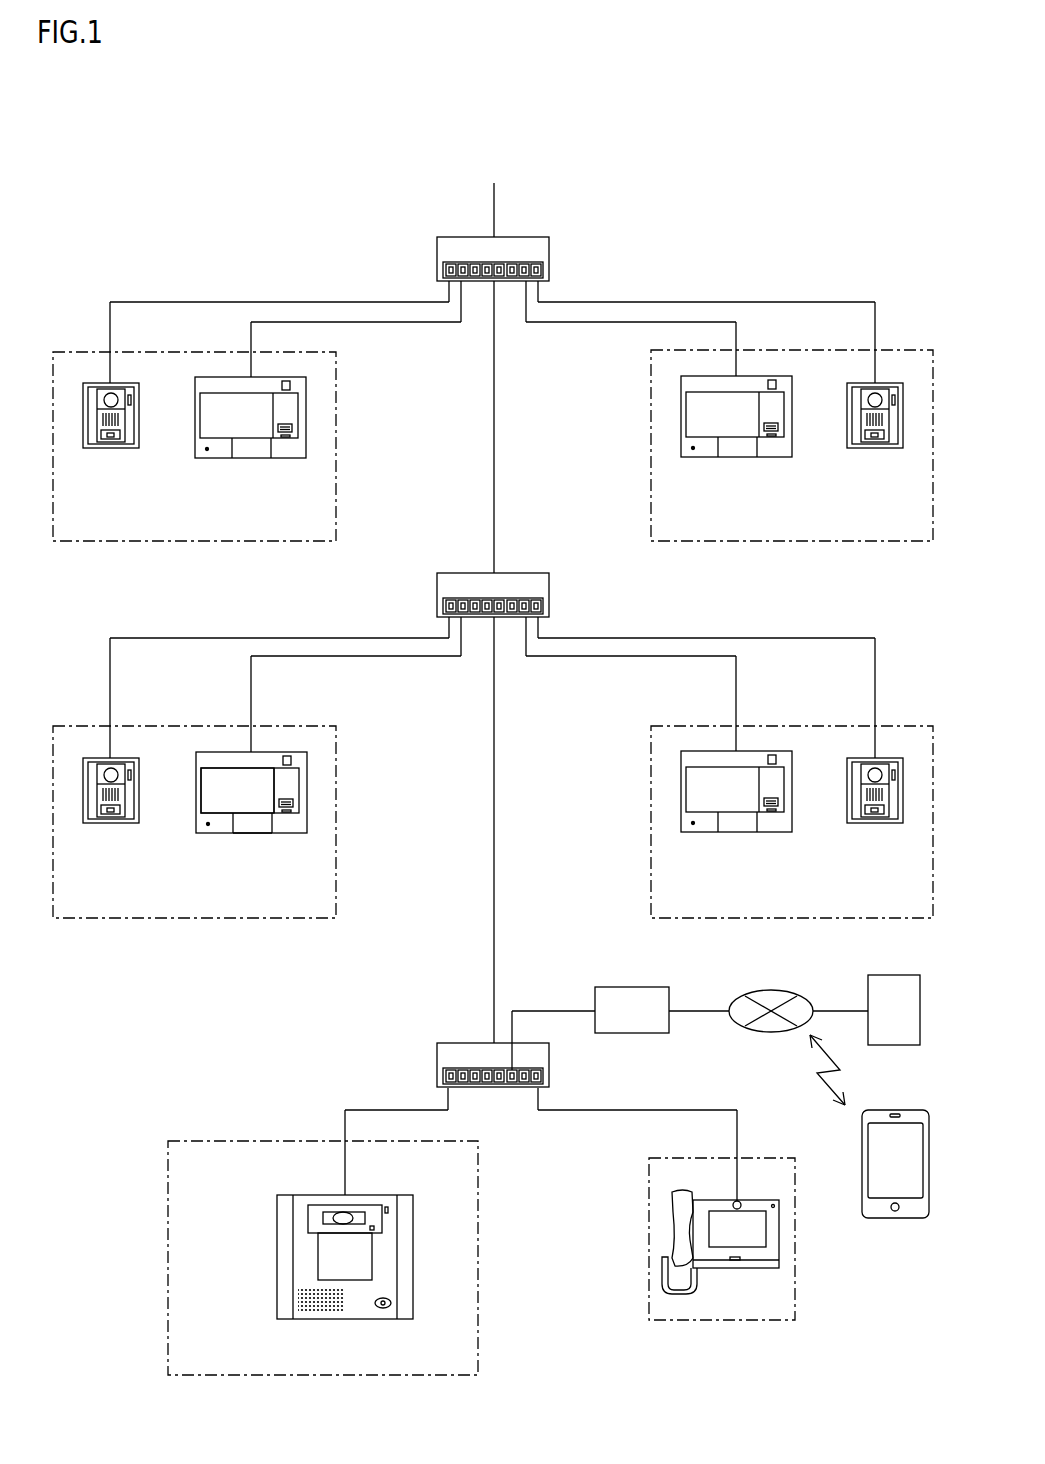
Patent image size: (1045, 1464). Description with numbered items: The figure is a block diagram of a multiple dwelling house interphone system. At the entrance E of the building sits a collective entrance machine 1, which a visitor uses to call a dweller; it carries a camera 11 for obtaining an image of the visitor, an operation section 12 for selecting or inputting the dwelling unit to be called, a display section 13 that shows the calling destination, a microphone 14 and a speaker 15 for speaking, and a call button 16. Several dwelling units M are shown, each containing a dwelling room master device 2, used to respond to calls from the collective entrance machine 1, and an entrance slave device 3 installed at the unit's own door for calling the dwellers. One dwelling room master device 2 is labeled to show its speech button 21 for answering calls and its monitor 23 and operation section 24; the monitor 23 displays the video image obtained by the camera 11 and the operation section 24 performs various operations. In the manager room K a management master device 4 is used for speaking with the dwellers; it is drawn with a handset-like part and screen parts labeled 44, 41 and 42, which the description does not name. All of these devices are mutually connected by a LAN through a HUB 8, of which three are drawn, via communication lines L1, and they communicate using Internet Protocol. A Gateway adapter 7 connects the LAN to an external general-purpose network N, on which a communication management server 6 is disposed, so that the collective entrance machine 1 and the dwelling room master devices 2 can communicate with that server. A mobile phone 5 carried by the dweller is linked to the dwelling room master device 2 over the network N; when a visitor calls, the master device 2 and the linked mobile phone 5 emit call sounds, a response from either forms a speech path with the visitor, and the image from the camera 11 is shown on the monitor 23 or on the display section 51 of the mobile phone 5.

The collective entrance machine 1 is at (324, 1258).
The dwelling room master device 2 is at (482, 632).
The entrance slave device 3 is at (106, 449).
The management master device 4 is at (720, 1251).
The mobile phone 5 is at (872, 1194).
The communication management server 6 is at (896, 975).
The Gateway adapter 7 is at (638, 987).
The HUB 8 is at (549, 265).
The camera 11 is at (342, 1211).
The operation section 12 is at (278, 1242).
The display section 13 is at (320, 1253).
The microphone 14 is at (388, 1207).
The speaker 15 is at (323, 1312).
The call button 16 is at (383, 1308).
The speech button 21 is at (251, 835).
The monitor 23 is at (278, 748).
The operation section 24 is at (247, 783).
The display unit 41 is at (725, 1296).
The operation unit 42 is at (718, 1236).
The handset 44 is at (682, 1203).
The display section 51 is at (880, 1162).
The communication line L1 is at (314, 301).
The dwelling unit M is at (140, 542).
The entrance E is at (198, 1141).
The manager room K is at (665, 1330).
The general-purpose network N is at (773, 990).